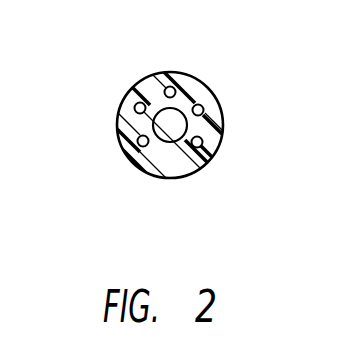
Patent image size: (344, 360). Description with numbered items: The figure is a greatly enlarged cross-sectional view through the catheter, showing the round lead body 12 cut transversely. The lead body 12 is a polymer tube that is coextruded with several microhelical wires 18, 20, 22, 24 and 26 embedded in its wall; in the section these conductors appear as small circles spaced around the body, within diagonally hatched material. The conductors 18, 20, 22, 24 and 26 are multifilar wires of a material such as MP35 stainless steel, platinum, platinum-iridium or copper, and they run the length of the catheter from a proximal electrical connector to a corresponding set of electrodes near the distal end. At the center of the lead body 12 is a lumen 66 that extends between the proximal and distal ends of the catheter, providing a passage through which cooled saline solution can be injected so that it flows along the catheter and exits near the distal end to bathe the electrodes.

The lead body 12 is at (221, 128).
The microhelical wire 18 is at (157, 90).
The microhelical wire 20 is at (134, 106).
The microhelical wire 22 is at (138, 145).
The microhelical wire 24 is at (202, 146).
The microhelical wire 26 is at (203, 108).
The lumen 66 is at (185, 95).